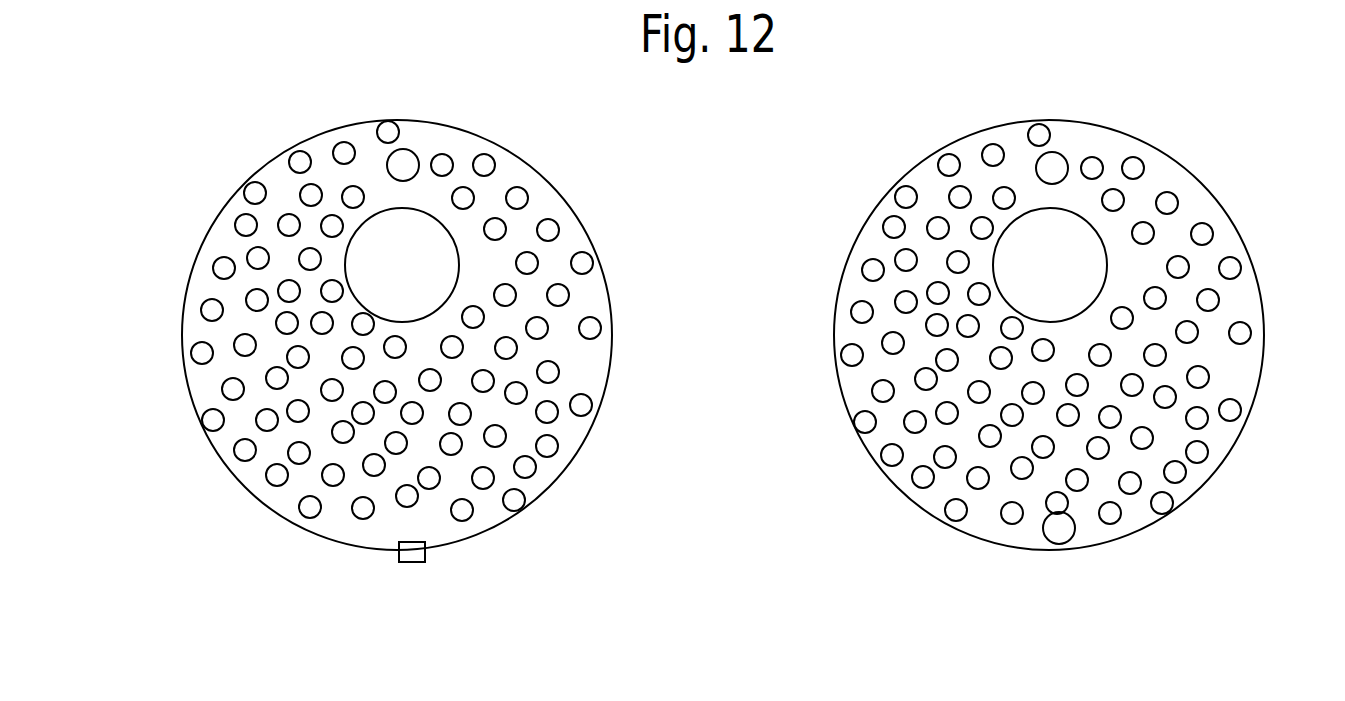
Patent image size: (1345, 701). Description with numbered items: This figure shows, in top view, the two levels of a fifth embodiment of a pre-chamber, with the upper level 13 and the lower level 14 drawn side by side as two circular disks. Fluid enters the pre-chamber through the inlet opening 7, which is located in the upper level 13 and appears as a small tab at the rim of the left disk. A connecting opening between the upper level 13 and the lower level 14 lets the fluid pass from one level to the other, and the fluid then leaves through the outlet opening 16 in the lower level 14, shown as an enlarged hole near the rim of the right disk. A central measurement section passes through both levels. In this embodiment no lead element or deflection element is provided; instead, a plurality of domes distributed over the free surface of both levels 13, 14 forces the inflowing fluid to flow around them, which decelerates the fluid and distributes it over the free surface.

The inlet opening 7 is at (409, 562).
The upper level 13 is at (510, 540).
The lower level 14 is at (908, 519).
The outlet opening 16 is at (1060, 540).